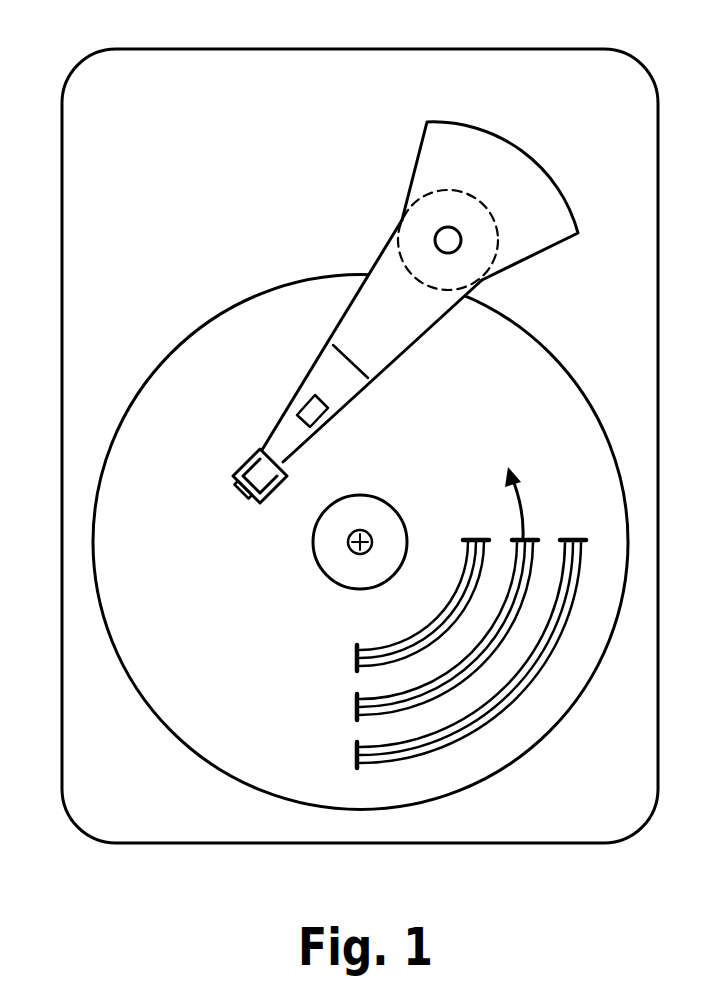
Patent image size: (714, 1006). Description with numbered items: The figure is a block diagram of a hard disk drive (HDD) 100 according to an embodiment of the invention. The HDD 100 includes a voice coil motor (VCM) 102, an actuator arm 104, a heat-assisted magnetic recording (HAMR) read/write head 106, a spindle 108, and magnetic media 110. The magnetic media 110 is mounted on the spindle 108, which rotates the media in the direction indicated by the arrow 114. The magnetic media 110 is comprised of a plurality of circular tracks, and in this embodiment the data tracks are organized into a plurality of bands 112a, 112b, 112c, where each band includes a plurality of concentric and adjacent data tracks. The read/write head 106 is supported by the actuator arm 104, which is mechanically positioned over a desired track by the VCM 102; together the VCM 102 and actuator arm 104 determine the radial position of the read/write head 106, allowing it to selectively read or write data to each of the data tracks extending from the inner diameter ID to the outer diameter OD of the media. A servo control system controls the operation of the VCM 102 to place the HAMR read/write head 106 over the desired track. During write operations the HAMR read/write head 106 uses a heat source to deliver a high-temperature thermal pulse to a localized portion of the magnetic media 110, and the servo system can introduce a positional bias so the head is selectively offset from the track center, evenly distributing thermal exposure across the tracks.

The hard disk drive 100 is at (565, 49).
The voice coil motor 102 is at (522, 151).
The actuator arm 104 is at (348, 322).
The HAMR read/write head 106 is at (284, 472).
The spindle 108 is at (368, 533).
The magnetic media 110 is at (538, 338).
The band 112a is at (350, 650).
The band 112b is at (350, 700).
The band 112c is at (350, 750).
The arrow 114 is at (522, 493).
The inner diameter ID is at (355, 494).
The outer diameter OD is at (573, 377).